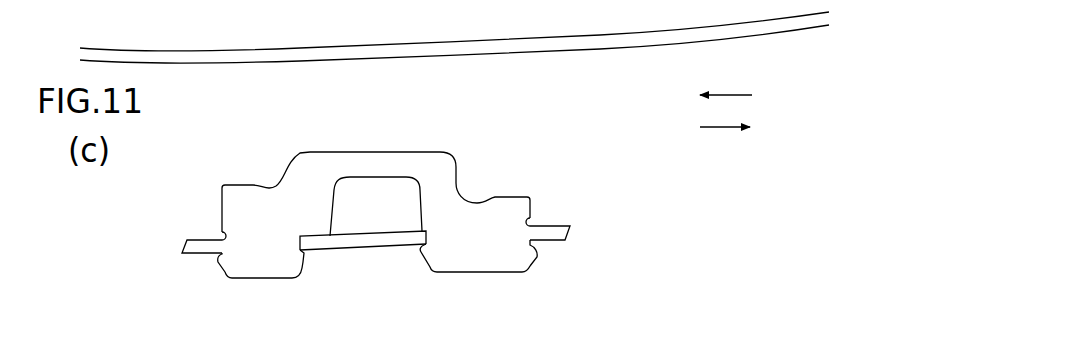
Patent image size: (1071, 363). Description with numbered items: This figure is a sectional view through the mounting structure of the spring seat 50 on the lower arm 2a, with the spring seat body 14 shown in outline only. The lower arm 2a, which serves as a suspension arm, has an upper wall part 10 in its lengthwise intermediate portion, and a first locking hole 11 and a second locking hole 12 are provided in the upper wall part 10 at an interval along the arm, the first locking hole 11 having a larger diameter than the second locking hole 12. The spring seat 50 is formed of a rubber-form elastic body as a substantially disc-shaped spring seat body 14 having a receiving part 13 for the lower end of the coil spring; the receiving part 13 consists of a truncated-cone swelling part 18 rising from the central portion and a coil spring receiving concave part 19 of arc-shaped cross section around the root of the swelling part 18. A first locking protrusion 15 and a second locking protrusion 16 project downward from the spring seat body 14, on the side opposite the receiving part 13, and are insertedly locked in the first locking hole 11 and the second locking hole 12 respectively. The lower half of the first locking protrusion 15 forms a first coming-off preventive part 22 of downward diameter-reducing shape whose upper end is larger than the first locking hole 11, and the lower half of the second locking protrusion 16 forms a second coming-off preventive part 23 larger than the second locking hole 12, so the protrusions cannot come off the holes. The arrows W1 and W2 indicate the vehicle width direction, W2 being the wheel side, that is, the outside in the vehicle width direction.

The spring seat 50 is at (263, 135).
The spring seat body 14 is at (380, 212).
The receiving part 13 is at (410, 143).
The swelling part 18 is at (375, 150).
The coil spring receiving concave part 19 is at (483, 190).
The second locking protrusion 16 is at (257, 286).
The first locking protrusion 15 is at (498, 284).
The second locking hole 12 is at (223, 233).
The first locking hole 11 is at (532, 218).
The second coming-off preventive part 23 is at (222, 267).
The first coming-off preventive part 22 is at (533, 258).
The upper wall part 10 is at (370, 292).
The lower arm 2a is at (402, 252).
The direction W1 is at (741, 97).
The wheel side W2 is at (741, 129).